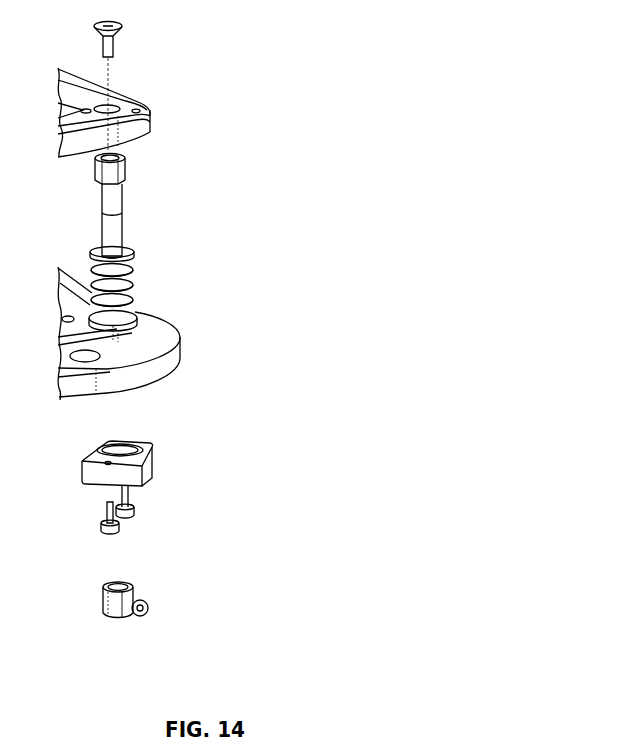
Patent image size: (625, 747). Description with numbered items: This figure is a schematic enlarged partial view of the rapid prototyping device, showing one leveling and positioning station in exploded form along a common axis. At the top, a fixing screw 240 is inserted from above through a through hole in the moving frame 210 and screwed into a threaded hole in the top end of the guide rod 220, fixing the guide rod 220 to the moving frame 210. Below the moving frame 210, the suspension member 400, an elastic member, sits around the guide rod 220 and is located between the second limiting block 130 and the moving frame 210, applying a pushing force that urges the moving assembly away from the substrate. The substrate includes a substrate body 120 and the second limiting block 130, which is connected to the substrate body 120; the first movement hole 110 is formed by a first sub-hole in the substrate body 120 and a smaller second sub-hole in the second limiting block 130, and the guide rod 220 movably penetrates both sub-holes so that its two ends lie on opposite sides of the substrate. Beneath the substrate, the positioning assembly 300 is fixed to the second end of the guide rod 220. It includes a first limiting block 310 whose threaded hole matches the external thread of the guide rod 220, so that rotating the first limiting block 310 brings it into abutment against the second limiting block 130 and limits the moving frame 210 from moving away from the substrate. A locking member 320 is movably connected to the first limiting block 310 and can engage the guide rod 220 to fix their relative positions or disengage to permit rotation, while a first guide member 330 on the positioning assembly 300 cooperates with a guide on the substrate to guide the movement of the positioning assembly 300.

The fixing screw 240 is at (123, 31).
The moving frame 210 is at (142, 135).
The guide rod 220 is at (112, 202).
The suspension member 400 is at (128, 284).
The first movement hole 110 is at (118, 320).
The substrate body 120 is at (134, 373).
The second limiting block 130 is at (152, 462).
The positioning assembly 300 is at (222, 619).
The first guide member 330 is at (133, 588).
The locking member 320 is at (148, 608).
The first limiting block 310 is at (179, 646).